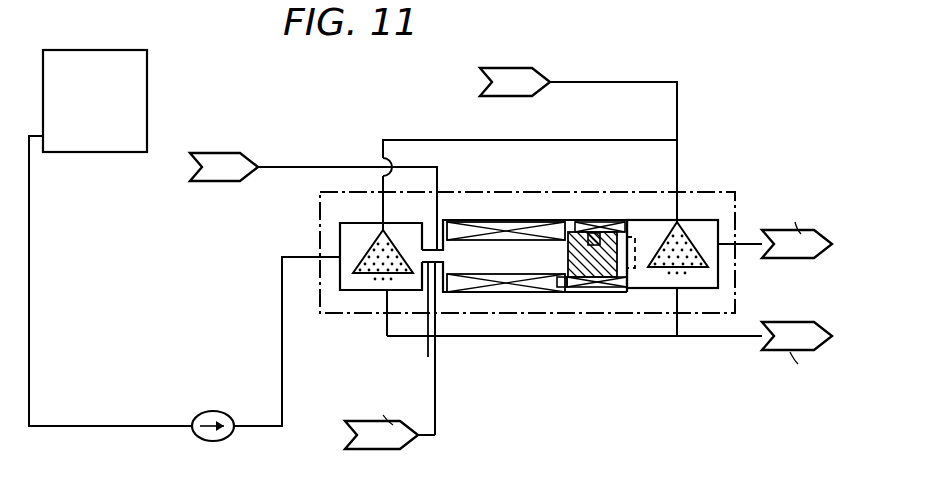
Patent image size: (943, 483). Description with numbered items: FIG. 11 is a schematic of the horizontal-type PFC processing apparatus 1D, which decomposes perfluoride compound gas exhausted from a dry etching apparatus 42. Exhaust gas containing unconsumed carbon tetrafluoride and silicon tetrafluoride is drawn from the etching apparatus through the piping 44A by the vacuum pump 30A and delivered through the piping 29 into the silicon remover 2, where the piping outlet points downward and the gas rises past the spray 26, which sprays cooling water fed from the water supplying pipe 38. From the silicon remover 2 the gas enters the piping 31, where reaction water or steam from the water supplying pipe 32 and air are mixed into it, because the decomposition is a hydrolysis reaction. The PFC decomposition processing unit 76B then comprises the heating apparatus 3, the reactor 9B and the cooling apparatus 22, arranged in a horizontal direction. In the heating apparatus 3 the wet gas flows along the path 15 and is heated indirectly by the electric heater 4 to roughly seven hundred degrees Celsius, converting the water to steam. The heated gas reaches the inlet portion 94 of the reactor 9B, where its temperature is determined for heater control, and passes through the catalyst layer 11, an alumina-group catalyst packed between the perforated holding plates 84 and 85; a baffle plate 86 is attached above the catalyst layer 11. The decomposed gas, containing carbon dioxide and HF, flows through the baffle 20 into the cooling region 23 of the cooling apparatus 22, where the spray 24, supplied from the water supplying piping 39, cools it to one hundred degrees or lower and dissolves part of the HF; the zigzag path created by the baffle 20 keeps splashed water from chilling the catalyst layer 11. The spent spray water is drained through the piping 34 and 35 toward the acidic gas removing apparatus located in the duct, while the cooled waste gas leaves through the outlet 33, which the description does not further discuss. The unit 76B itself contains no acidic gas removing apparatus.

The dry etching apparatus 42 is at (110, 52).
The piping 44A is at (31, 318).
The vacuum pump 30A is at (213, 411).
The piping 29 is at (280, 324).
The water supplying pipe 32 is at (233, 145).
The water supplying pipe 38 is at (612, 140).
The water supplying piping 39 is at (520, 60).
The PFC processing apparatus 1D is at (413, 193).
The spray 26 is at (378, 235).
The silicon remover 2 is at (374, 292).
The piping 31 is at (391, 355).
The path 15 is at (517, 272).
The electric heater 4 is at (463, 232).
The PFC decomposition processing unit 76B is at (505, 228).
The heating apparatus 3 is at (473, 292).
The catalyst layer 11 is at (568, 232).
The baffle plate 86 is at (599, 234).
The inlet portion 94 is at (568, 292).
The holding plate 84 is at (562, 293).
The reactor 9B is at (601, 292).
The holding plate 85 is at (620, 292).
The baffle 20 is at (637, 252).
The cooling region 23 is at (708, 238).
The spray 24 is at (690, 238).
The cooling apparatus 22 is at (676, 292).
The waste gas outlet pipe 33 is at (745, 246).
The piping 35 is at (506, 336).
The piping 34 is at (678, 318).